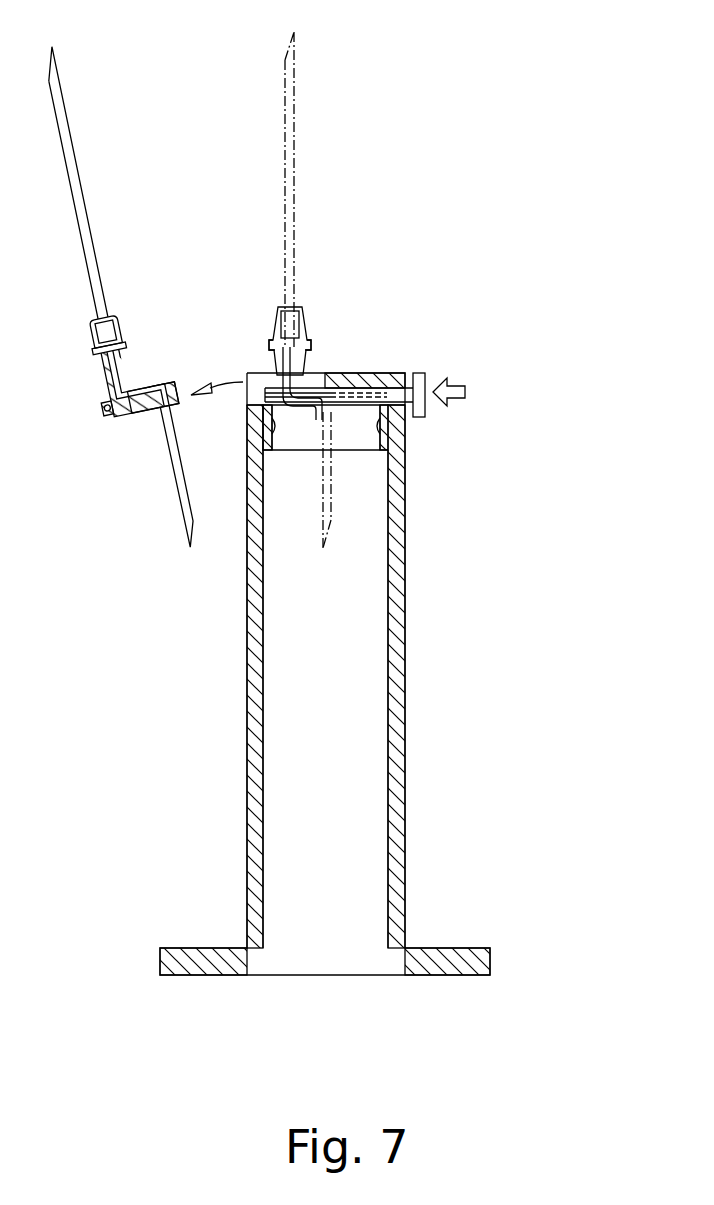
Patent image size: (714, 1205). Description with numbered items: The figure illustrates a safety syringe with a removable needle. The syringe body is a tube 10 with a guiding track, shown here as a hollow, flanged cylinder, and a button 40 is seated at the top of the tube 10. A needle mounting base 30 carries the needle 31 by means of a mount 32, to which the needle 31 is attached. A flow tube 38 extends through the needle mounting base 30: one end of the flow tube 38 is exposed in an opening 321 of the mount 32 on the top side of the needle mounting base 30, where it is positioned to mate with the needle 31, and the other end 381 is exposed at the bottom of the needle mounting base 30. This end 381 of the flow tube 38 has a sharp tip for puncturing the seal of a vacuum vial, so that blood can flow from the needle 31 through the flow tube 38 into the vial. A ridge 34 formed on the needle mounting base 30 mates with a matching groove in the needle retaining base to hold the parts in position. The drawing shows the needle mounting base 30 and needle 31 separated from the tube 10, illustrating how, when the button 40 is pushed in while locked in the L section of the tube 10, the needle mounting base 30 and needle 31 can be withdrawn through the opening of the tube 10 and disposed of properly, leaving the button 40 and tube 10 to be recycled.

The tube 10 is at (255, 782).
The needle mounting base 30 is at (130, 297).
The needle 31 is at (300, 316).
The mount 32 is at (305, 360).
The opening 321 is at (270, 338).
The ridge 34 is at (160, 388).
The flow tube 38 is at (328, 460).
The end of flow tube 381 is at (330, 522).
The button 40 is at (425, 412).